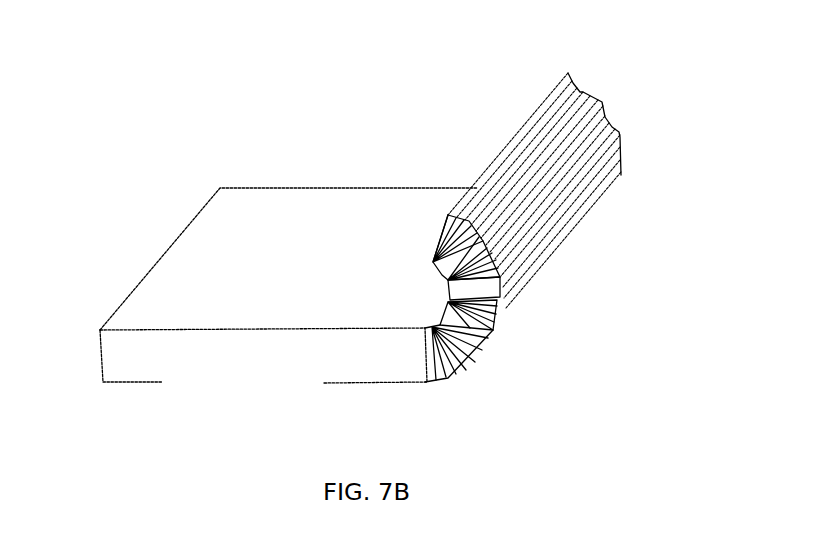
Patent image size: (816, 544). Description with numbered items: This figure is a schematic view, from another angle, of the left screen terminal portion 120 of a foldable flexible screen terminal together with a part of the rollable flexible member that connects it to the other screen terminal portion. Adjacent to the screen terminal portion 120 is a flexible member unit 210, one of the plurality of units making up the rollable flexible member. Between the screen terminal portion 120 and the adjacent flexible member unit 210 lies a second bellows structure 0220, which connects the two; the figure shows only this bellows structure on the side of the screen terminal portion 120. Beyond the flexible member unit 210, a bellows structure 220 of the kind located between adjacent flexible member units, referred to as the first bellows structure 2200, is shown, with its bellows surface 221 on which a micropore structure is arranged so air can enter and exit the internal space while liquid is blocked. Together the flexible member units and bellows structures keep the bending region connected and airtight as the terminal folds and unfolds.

The screen terminal portion 120 is at (198, 258).
The bellows structure 220 is at (520, 150).
The bellows surface 221 is at (607, 120).
The flexible member unit 210 is at (483, 332).
The first bellows structure 2200 is at (498, 303).
The second bellows structure 0220 is at (440, 381).